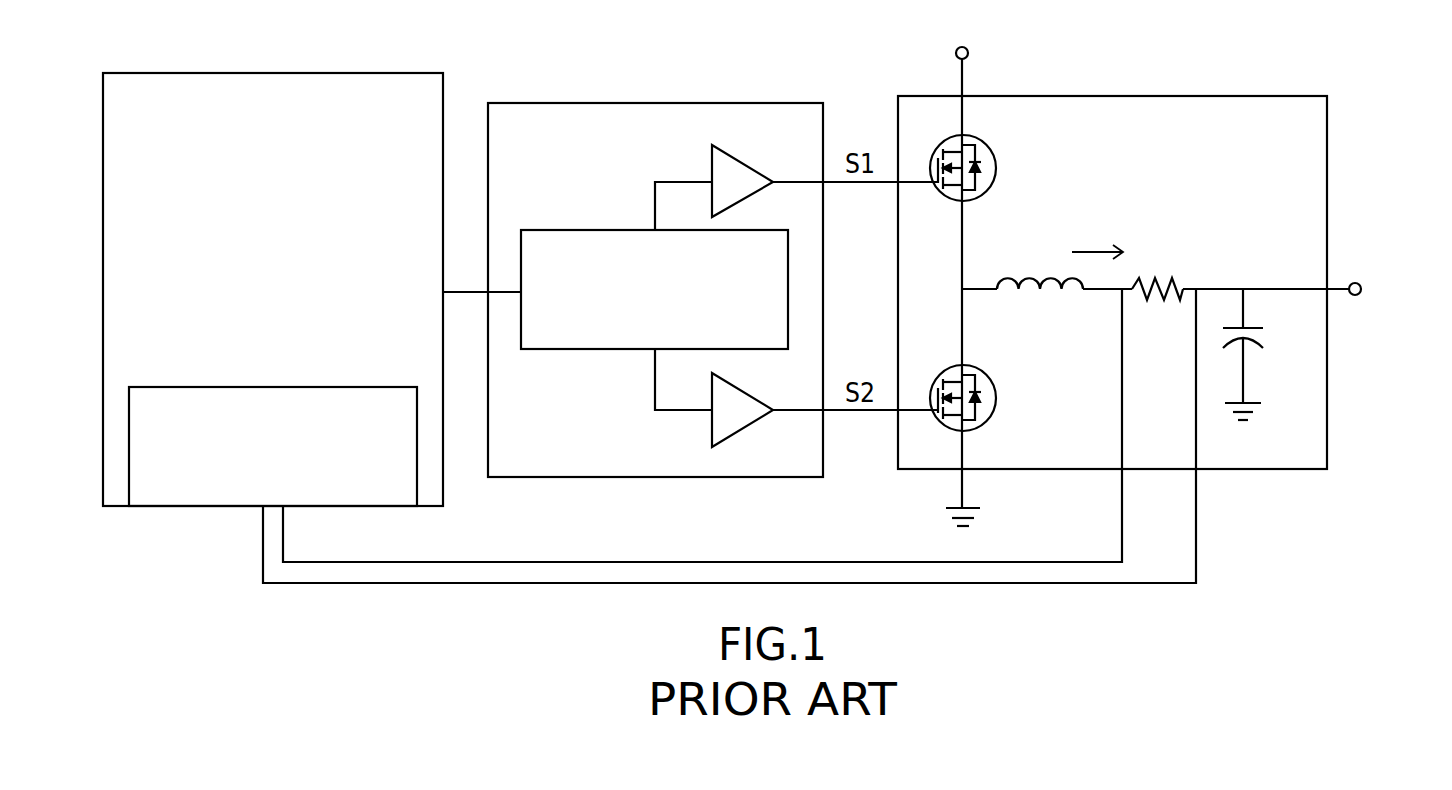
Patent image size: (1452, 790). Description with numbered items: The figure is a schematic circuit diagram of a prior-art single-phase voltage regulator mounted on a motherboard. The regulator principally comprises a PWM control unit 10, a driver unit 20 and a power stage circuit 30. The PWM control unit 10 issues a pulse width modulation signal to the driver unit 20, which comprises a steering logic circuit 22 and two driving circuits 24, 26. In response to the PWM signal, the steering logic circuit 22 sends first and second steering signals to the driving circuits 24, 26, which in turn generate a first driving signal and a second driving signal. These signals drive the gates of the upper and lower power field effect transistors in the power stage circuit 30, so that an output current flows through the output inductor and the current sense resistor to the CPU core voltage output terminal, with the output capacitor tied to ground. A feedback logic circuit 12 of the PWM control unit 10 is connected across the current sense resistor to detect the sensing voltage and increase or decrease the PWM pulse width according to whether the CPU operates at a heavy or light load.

The PWM control unit 10 is at (348, 88).
The feedback logic circuit 12 is at (308, 398).
The driver unit 20 is at (615, 122).
The steering logic circuit 22 is at (625, 242).
The driving circuit 24 is at (730, 172).
The driving circuit 26 is at (730, 408).
The power stage circuit 30 is at (1237, 107).